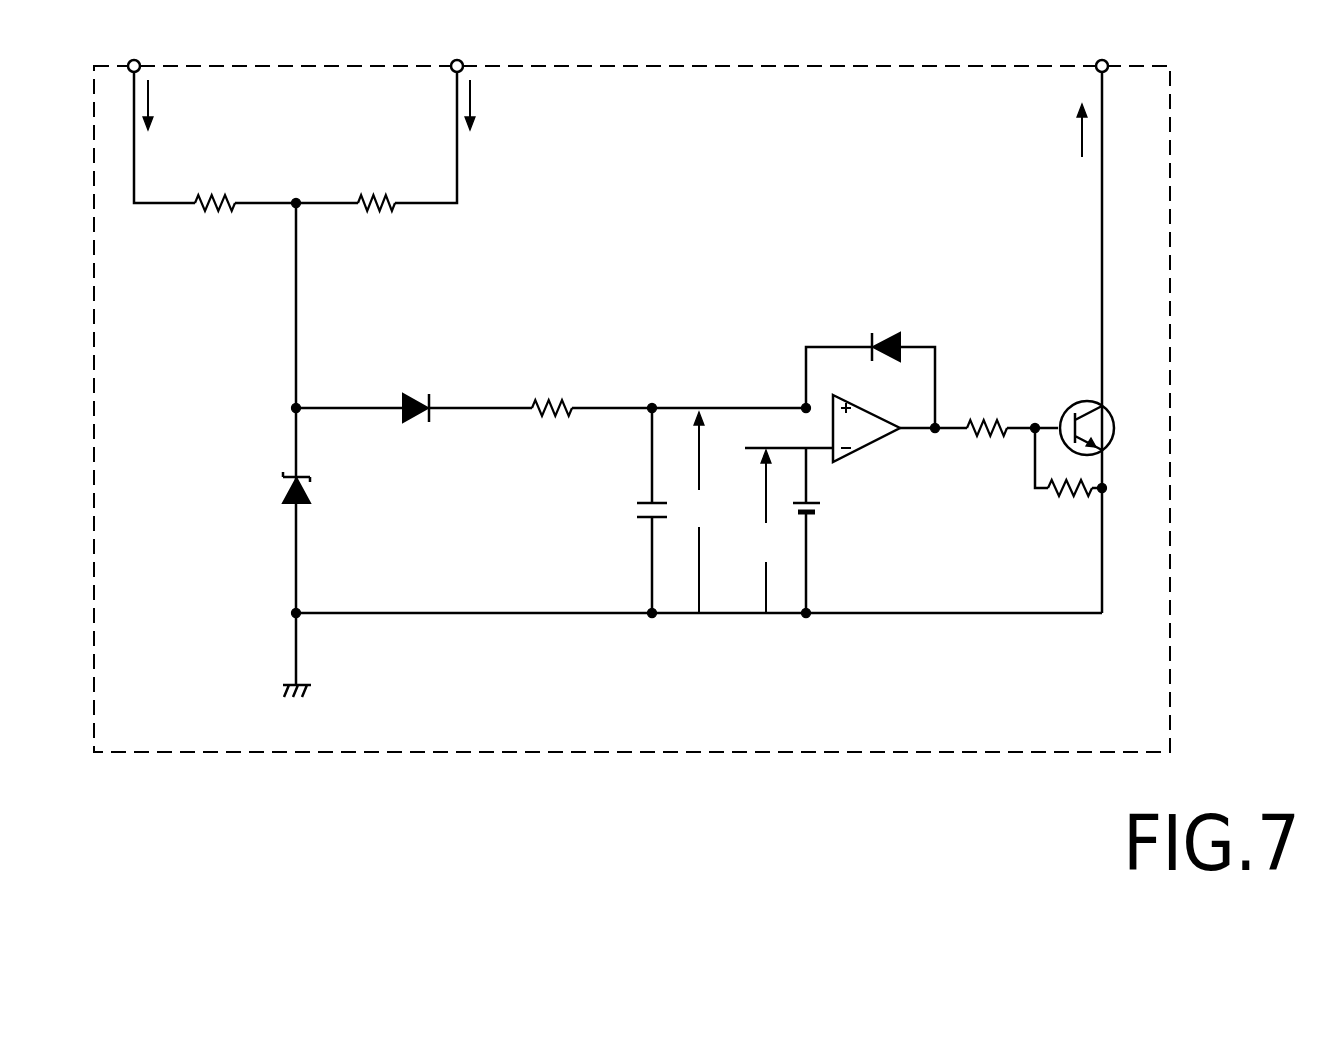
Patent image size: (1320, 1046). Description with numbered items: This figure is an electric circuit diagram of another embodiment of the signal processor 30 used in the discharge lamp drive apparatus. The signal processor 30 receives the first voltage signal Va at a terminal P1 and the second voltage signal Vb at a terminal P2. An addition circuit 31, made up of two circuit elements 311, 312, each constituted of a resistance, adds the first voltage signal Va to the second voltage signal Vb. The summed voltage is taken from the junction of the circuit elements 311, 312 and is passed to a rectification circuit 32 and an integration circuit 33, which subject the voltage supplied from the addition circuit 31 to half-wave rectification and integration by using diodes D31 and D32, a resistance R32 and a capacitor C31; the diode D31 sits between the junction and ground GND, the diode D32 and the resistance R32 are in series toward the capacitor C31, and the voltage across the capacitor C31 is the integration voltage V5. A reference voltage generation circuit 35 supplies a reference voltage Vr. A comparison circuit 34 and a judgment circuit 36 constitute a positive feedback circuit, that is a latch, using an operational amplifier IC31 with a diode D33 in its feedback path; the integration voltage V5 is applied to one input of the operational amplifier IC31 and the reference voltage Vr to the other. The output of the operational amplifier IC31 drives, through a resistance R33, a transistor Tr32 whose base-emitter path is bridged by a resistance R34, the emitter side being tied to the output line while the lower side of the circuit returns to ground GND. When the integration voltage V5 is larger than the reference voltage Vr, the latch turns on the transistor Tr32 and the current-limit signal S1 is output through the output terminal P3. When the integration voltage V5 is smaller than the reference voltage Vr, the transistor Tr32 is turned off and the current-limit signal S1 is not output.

The signal processor 30 is at (1170, 176).
The addition circuit 31 is at (307, 163).
The circuit element 311 is at (215, 188).
The circuit element 312 is at (369, 188).
The rectification circuit 32 is at (414, 425).
The integration circuit 33 is at (614, 424).
The comparison circuit 34 is at (923, 397).
The reference voltage generation circuit 35 is at (821, 507).
The judgment circuit 36 is at (1007, 442).
The terminal P1 is at (138, 58).
The terminal P2 is at (461, 58).
The output terminal P3 is at (1106, 58).
The first voltage signal Va is at (154, 112).
The second voltage signal Vb is at (477, 112).
The current-limit signal S1 is at (1078, 129).
The diode D31 is at (283, 490).
The diode D32 is at (416, 394).
The diode D33 is at (877, 338).
The resistance R32 is at (669, 383).
The resistance R33 is at (995, 404).
The resistance R34 is at (1068, 490).
The capacitor C31 is at (637, 511).
The integration voltage V5 is at (704, 512).
The reference voltage Vr is at (789, 530).
The operational amplifier IC31 is at (873, 446).
The transistor Tr32 is at (1086, 398).
The ground GND is at (314, 689).